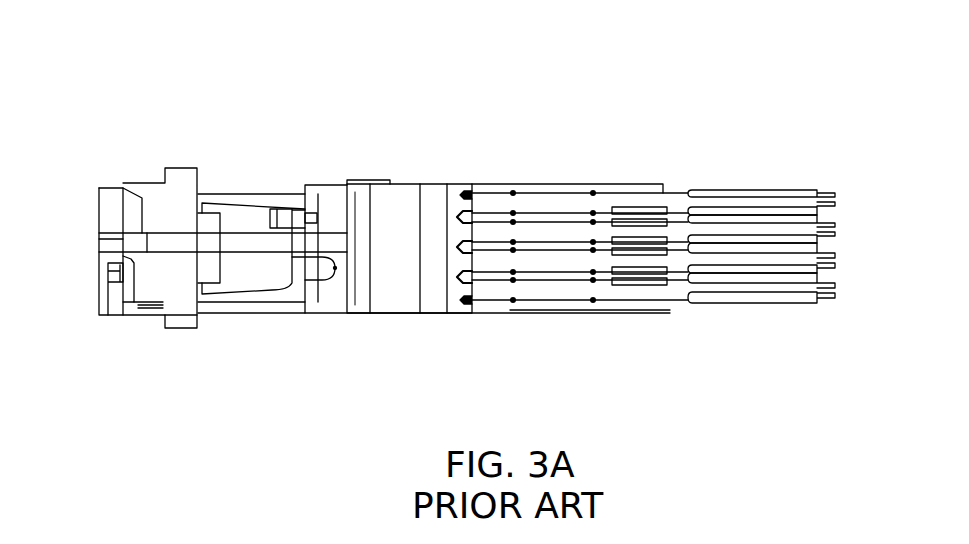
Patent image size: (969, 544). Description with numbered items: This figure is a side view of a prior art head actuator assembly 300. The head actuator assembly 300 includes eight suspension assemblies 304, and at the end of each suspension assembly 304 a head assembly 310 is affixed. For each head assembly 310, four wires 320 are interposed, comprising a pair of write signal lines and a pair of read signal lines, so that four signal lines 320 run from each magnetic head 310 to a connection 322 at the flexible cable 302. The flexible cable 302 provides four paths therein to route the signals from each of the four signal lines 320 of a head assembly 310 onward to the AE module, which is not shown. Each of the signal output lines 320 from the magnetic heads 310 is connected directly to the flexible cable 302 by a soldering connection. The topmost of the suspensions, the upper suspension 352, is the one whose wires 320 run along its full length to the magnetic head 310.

The head actuator assembly 300 is at (268, 325).
The flexible cable 302 is at (458, 292).
The suspension assembly 304 is at (718, 212).
The head assembly 310 is at (837, 202).
The wires 320 is at (553, 193).
The connection 322 is at (462, 193).
The upper suspension 352 is at (637, 193).